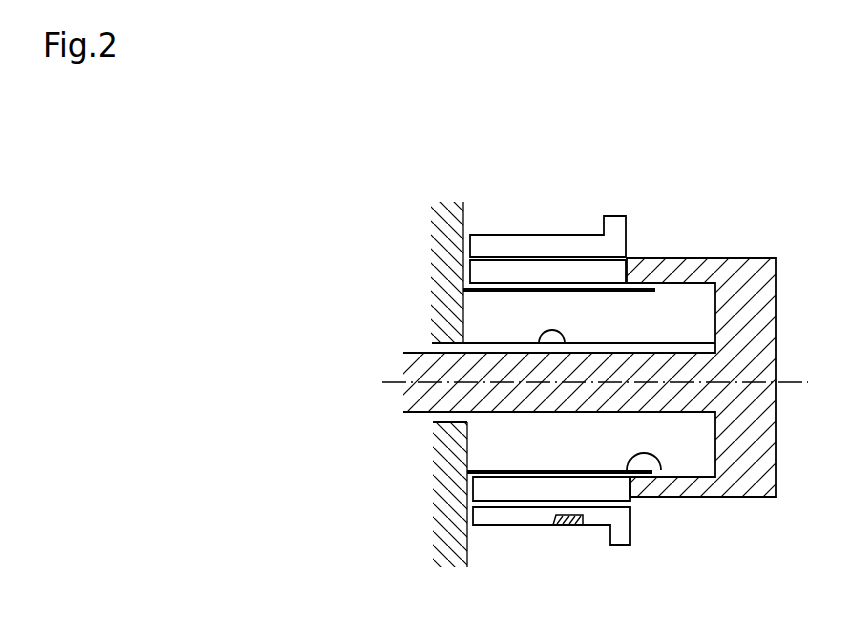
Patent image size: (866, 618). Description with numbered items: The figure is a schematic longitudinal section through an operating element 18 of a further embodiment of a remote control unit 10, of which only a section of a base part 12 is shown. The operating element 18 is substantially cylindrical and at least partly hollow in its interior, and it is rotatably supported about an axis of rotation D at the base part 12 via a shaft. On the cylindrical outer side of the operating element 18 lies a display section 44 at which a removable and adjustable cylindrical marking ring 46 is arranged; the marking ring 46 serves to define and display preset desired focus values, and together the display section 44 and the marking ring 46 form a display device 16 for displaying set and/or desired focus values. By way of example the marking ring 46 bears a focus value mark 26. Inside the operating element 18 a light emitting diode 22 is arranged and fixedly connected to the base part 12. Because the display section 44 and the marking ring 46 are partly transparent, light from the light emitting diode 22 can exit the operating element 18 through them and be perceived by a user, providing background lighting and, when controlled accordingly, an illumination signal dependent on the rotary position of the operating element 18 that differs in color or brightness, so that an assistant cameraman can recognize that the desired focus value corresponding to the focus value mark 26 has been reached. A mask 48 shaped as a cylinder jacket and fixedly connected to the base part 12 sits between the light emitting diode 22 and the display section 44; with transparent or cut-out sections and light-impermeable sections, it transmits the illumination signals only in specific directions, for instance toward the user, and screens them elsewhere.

The remote control unit 10 is at (374, 158).
The base part 12 is at (463, 217).
The display device 16 is at (544, 209).
The operating element 18 is at (777, 318).
The light emitting diode 22 is at (561, 337).
The focus value mark 26 is at (568, 526).
The display section 44 is at (605, 268).
The marking ring 46 is at (577, 245).
The mask 48 is at (652, 462).
The axis of rotation D is at (608, 381).